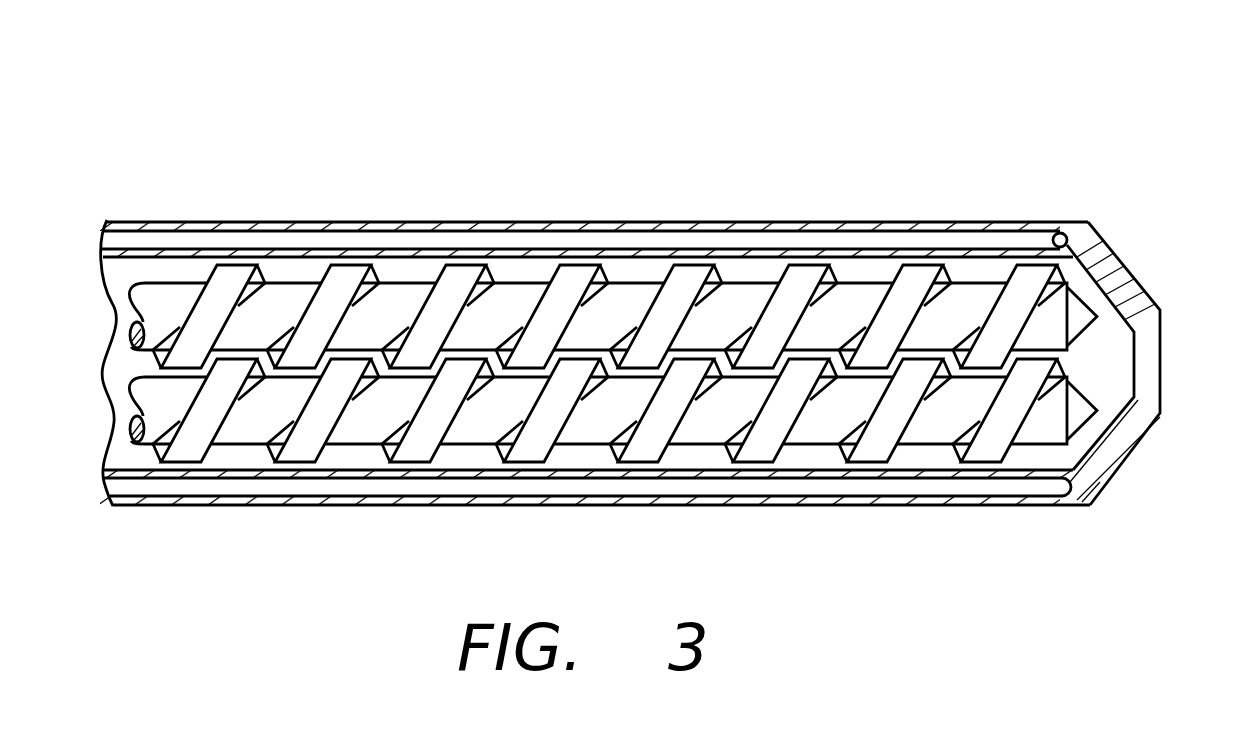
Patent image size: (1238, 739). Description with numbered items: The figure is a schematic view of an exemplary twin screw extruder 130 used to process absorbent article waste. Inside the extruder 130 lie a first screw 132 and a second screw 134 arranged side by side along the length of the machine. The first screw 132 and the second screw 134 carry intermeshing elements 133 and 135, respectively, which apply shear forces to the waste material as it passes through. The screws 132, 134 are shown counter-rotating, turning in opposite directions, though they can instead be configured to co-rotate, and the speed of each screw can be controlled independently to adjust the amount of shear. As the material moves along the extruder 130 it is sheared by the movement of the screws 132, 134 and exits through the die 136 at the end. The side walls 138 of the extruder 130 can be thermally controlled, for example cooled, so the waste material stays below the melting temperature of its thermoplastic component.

The twin screw extruder 130 is at (998, 138).
The first screw 132 is at (407, 302).
The intermeshing elements 133 is at (582, 268).
The second screw 134 is at (483, 425).
The intermeshing elements 135 is at (640, 450).
The die 136 is at (1145, 360).
The side walls 138 is at (765, 240).